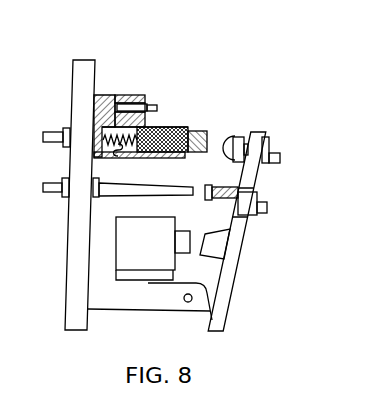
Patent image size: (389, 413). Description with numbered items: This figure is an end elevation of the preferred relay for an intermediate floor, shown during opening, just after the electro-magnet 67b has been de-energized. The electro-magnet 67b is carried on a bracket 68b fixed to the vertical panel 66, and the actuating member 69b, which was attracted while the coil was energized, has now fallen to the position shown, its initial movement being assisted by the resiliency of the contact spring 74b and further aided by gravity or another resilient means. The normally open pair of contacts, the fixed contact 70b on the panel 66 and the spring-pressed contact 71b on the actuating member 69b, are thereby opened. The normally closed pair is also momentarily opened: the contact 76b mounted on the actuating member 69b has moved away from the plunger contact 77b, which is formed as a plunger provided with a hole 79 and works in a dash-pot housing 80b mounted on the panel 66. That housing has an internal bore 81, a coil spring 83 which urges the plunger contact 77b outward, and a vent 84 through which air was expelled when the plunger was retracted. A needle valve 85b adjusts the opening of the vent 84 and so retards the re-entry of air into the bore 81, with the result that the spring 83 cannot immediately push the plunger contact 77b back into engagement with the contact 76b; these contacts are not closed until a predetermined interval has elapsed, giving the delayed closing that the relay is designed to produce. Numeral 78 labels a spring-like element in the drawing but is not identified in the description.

The vertical panel 66 is at (74, 241).
The electro-magnet 67b is at (160, 262).
The bracket 68b is at (100, 297).
The actuating member 69b is at (236, 249).
The contact 70b is at (108, 207).
The contact 71b is at (214, 190).
The spring 74b is at (218, 200).
The contact 76b is at (236, 134).
The plunger contact 77b is at (199, 128).
The spring 78 is at (143, 157).
The hole 79 is at (190, 153).
The dash-pot housing 80b is at (94, 100).
The internal bore 81 is at (116, 156).
The coil spring 83 is at (168, 126).
The vent 84 is at (115, 95).
The needle valve 85b is at (129, 97).